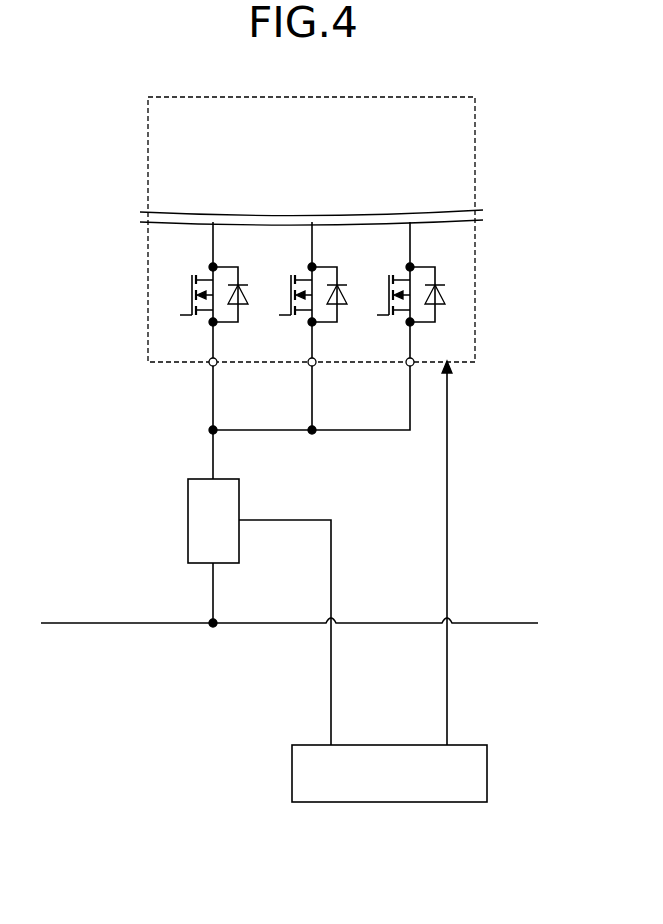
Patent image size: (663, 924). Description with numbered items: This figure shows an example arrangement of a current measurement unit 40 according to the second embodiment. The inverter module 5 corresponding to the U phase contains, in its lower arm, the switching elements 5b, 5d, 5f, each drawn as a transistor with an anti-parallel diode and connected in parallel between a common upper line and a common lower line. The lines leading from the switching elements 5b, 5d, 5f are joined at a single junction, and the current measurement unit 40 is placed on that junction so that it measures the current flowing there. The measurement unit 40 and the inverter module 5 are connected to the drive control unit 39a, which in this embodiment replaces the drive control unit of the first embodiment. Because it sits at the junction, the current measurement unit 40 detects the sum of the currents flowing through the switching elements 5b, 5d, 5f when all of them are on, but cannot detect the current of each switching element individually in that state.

The inverter module 5 is at (477, 276).
The switching element 5b is at (190, 297).
The switching element 5d is at (288, 298).
The switching element 5f is at (387, 292).
The current measurement unit 40 is at (188, 518).
The drive control unit 39a is at (392, 805).